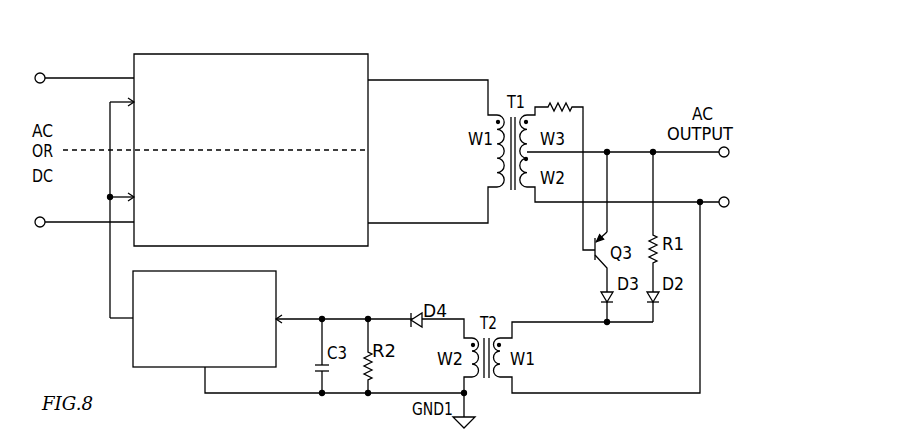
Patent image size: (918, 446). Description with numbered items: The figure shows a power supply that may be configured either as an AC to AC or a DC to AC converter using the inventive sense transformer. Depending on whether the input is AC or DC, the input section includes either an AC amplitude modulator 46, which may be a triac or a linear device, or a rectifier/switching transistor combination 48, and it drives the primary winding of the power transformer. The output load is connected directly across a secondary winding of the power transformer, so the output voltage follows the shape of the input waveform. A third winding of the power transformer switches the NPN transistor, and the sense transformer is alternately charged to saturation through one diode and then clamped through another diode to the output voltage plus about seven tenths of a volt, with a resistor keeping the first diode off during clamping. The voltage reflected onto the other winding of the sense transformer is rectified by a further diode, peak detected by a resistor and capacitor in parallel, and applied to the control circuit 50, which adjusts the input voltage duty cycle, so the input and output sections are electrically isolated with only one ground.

The AC amplitude modulator 46 is at (251, 102).
The rectifier/switching transistor combination 48 is at (215, 198).
The control circuit 50 is at (204, 319).